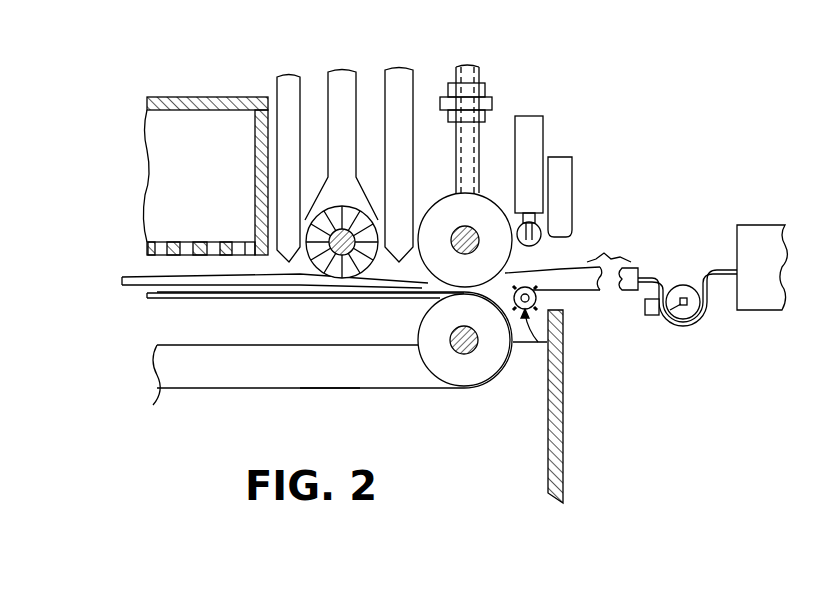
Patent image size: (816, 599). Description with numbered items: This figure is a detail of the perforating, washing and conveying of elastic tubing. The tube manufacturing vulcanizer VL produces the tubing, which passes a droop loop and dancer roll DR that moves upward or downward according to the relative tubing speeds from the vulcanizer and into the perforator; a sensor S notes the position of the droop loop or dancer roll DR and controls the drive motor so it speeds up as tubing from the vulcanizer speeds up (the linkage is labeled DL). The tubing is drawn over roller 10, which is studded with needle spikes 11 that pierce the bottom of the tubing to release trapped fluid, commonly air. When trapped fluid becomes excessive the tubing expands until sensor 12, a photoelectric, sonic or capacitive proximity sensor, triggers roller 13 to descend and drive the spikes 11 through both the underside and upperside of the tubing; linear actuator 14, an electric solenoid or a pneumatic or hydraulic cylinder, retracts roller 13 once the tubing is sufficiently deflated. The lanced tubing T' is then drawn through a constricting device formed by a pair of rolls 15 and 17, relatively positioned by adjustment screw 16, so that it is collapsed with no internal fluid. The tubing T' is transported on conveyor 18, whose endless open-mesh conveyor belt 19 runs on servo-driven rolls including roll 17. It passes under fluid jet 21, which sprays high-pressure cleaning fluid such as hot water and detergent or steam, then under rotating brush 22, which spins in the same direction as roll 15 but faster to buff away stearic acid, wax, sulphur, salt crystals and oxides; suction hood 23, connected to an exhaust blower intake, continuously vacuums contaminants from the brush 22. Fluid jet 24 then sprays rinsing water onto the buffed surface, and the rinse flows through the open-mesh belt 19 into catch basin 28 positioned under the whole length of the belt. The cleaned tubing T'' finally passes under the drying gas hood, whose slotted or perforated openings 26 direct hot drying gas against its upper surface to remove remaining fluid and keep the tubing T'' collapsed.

The roller 10 is at (540, 298).
The needle spikes 11 is at (538, 342).
The sensor 12 is at (547, 138).
The roller 13 is at (531, 246).
The linear actuator 14 is at (531, 116).
The roll 15 is at (485, 193).
The adjustment screw 16 is at (467, 67).
The roll 17 is at (420, 357).
The conveyor 18 is at (333, 382).
The open-mesh conveyor belt 19 is at (238, 387).
The fluid jet 21 is at (400, 67).
The rotating brush 22 is at (318, 272).
The suction hood 23 is at (346, 70).
The fluid jet 24 is at (292, 74).
The openings 26 is at (240, 242).
The catch basin 28 is at (167, 360).
The lanced tubing T' is at (305, 303).
The cleaned tubing T'' is at (261, 266).
The sensor S is at (651, 316).
The dancer roll DR is at (688, 323).
The drive linkage DL is at (708, 315).
The vulcanizer VL is at (771, 273).